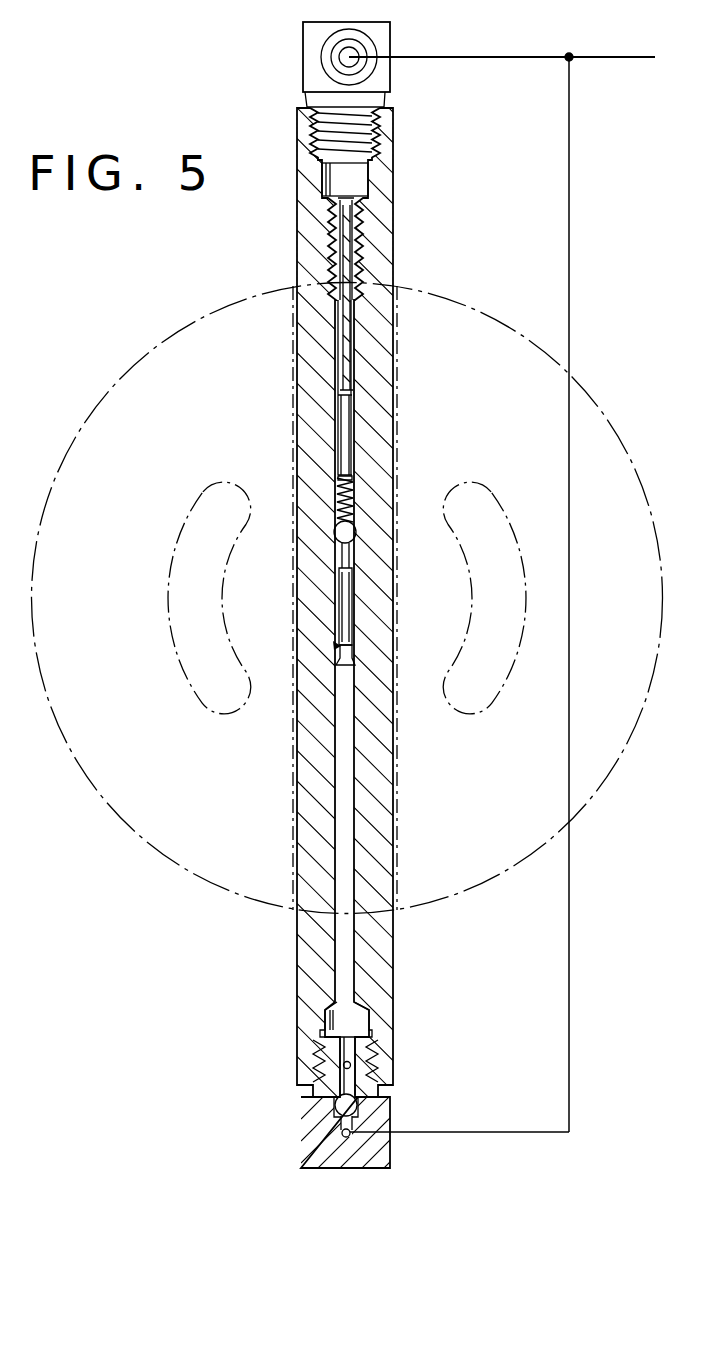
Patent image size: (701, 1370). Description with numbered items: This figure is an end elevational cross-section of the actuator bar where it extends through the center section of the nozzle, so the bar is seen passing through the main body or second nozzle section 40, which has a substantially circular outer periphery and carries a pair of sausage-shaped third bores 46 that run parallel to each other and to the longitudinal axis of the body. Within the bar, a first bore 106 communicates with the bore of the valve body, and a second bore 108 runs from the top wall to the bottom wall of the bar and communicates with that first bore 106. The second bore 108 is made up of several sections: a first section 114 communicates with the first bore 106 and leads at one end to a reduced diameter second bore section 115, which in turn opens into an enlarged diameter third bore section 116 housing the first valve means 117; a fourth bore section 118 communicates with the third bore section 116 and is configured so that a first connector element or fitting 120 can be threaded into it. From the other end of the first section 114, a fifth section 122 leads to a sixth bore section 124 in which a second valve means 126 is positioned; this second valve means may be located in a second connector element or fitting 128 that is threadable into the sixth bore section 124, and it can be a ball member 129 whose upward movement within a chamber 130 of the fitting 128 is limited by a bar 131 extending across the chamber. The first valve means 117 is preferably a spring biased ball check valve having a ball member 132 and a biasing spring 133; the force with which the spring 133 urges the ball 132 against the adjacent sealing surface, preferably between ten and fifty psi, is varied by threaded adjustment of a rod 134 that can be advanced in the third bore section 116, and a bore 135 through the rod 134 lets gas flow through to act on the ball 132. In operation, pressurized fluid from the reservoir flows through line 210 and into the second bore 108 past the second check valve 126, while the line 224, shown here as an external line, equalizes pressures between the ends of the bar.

The second nozzle section 40 is at (118, 832).
The third bores 46 is at (172, 590).
The first bore 106 is at (348, 603).
The second bore 108 is at (344, 655).
The first section 114 is at (349, 634).
The second bore section 115 is at (345, 562).
The third bore section 116 is at (351, 500).
The first valve means 117 is at (326, 518).
The fourth bore section 118 is at (368, 181).
The first connector element or fitting 120 is at (333, 22).
The fifth section 122 is at (348, 780).
The sixth bore section 124 is at (362, 1027).
The second valve means 126 is at (322, 1114).
The second connector element or fitting 128 is at (325, 1168).
The ball member 129 is at (348, 1105).
The chamber 130 is at (338, 1052).
The bar 131 is at (350, 1063).
The ball member 132 is at (340, 534).
The biasing spring 133 is at (346, 486).
The rod 134 is at (340, 352).
The bore 135 is at (330, 242).
The line 210 is at (478, 57).
The line 224 is at (571, 1088).